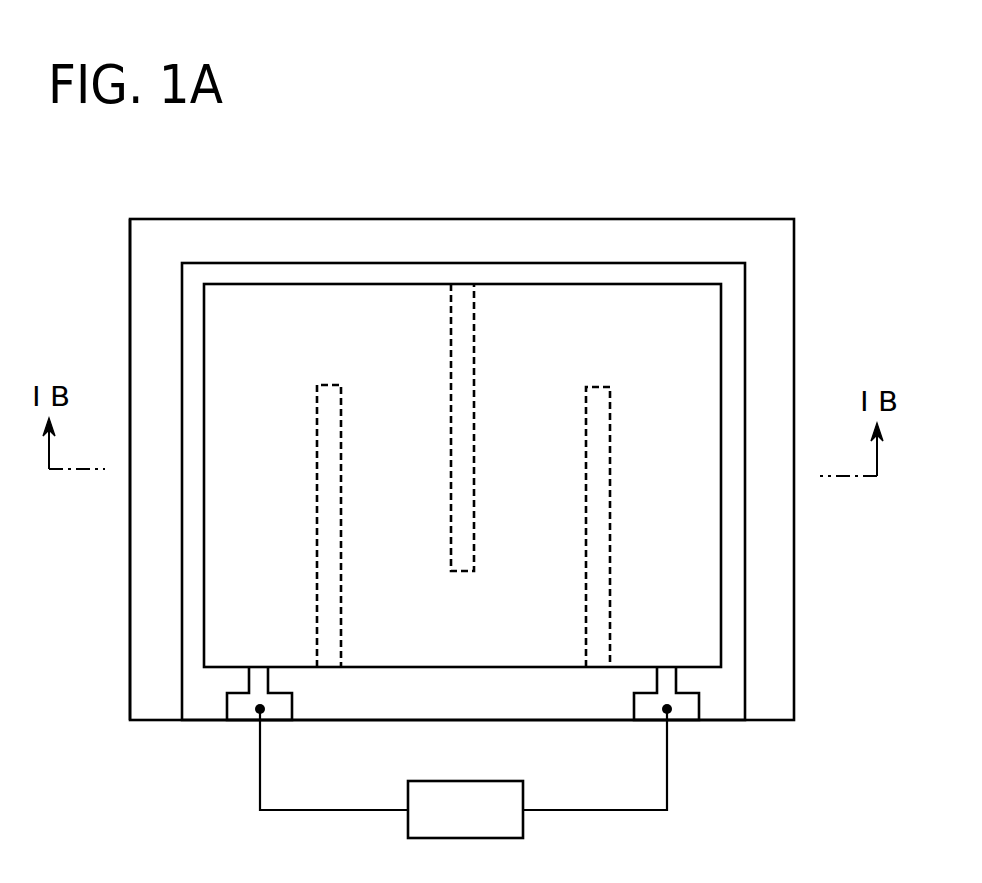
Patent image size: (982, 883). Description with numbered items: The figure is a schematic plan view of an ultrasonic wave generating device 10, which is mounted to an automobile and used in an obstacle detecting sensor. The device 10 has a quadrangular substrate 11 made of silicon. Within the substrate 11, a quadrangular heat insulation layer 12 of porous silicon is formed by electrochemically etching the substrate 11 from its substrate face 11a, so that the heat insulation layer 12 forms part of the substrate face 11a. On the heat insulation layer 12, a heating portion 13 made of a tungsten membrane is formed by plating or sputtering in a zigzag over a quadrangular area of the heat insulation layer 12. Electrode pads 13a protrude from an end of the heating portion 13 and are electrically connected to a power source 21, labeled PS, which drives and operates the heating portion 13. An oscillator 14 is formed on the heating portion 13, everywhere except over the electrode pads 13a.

The ultrasonic wave generating device 10 is at (748, 195).
The substrate 11 is at (212, 178).
The substrate face 11a is at (162, 232).
The heat insulation layer 12 is at (313, 272).
The heating portion 13 is at (604, 308).
The electrode pads 13a is at (238, 716).
The oscillator 14 is at (465, 284).
The power source 21 is at (494, 781).